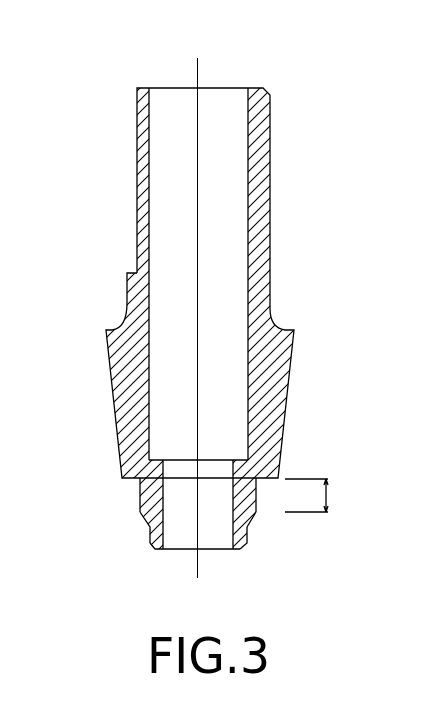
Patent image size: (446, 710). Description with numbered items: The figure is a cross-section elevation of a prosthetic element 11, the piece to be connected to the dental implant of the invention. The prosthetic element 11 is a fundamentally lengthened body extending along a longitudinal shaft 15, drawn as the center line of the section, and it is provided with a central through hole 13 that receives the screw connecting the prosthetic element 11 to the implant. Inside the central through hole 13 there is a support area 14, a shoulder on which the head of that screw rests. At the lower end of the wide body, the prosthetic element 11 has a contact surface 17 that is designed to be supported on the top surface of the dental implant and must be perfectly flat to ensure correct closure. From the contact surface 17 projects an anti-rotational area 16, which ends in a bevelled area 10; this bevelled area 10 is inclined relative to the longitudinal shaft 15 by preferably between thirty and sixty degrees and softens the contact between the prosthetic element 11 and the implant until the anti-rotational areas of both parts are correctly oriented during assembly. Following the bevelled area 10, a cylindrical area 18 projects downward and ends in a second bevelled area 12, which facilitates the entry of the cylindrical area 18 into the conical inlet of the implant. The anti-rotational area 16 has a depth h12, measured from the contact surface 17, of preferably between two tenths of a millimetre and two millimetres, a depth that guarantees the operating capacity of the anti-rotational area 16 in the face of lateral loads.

The bevelled area 10 is at (254, 522).
The prosthetic element 11 is at (113, 182).
The second bevelled area 12 is at (155, 549).
The central through hole 13 is at (210, 518).
The support area 14 is at (162, 459).
The longitudinal shaft 15 is at (198, 70).
The anti-rotational area 16 is at (258, 492).
The contact surface 17 is at (129, 483).
The cylindrical area 18 is at (250, 532).
The depth of the anti-rotational area h12 is at (328, 495).